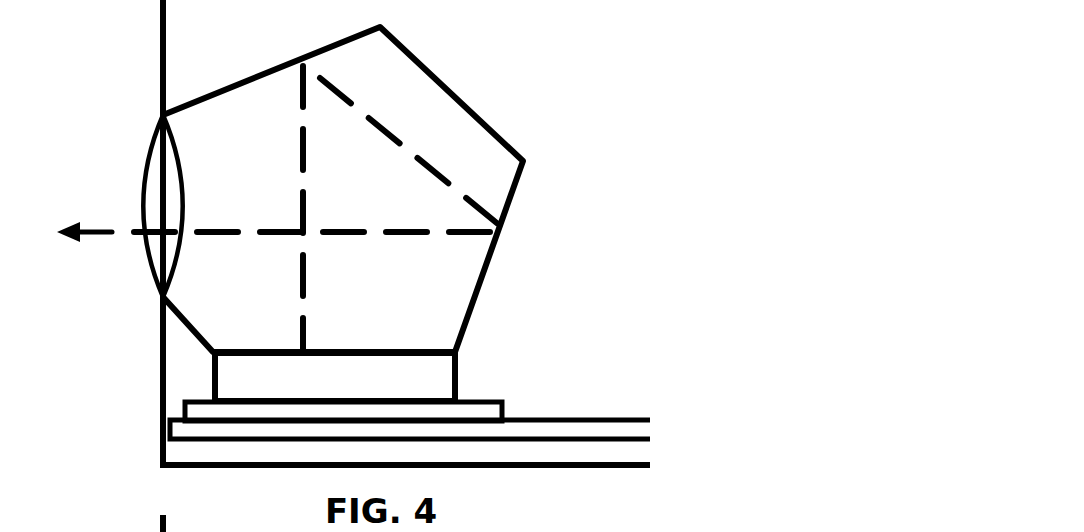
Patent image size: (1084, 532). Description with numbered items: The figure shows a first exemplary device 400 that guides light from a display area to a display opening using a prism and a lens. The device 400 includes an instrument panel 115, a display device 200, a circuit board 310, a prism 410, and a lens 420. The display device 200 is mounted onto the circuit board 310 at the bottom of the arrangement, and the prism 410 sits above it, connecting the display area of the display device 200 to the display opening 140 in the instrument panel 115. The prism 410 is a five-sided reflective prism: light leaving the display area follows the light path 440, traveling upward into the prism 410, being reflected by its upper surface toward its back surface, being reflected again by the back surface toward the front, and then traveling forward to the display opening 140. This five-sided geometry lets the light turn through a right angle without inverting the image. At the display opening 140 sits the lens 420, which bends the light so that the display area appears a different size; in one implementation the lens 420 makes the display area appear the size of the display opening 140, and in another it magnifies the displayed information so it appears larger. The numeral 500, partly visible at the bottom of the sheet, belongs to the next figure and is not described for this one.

The first exemplary device 400 is at (136, 37).
The instrument panel 115 is at (176, 10).
The display opening 140 is at (149, 124).
The lens 420 is at (136, 152).
The prism 410 is at (492, 292).
The light path 440 is at (109, 248).
The display device 200 is at (472, 383).
The circuit board 310 is at (665, 429).
The optical system (next figure) 500 is at (136, 507).